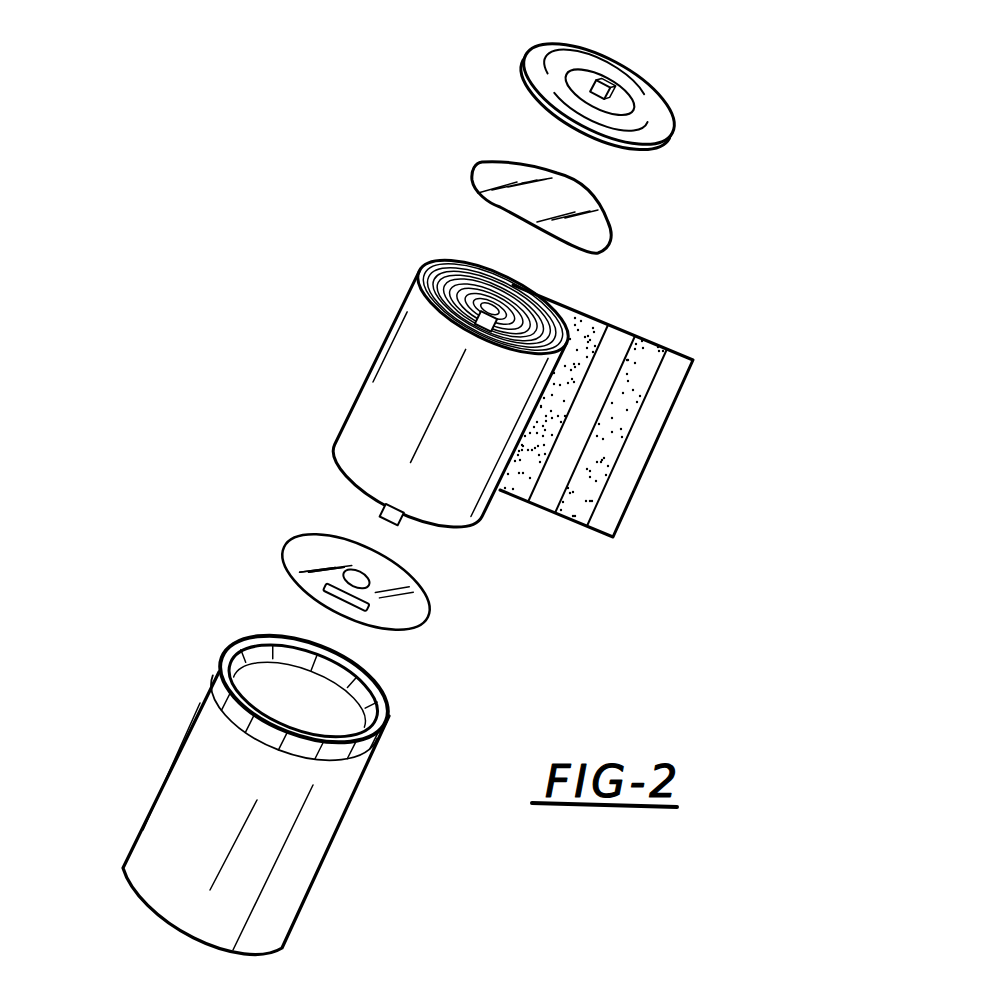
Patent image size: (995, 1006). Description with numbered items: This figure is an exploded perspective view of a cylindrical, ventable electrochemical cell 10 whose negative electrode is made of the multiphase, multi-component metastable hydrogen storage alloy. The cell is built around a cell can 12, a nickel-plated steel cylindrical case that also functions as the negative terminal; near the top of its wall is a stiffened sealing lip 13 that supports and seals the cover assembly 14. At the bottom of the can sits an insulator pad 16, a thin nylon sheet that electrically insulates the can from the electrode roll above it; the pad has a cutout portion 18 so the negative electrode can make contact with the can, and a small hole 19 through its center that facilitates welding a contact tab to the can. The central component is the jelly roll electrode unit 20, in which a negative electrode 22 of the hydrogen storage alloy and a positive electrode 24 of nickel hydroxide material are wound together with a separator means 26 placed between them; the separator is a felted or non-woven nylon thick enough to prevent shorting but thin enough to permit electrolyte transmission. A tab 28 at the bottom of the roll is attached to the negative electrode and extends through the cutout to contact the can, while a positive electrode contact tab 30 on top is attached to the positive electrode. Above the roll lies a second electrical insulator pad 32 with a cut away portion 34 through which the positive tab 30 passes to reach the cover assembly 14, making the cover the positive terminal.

The electrochemical cell 10 is at (737, 139).
The cell can 12 is at (178, 758).
The stiffened sealing lip 13 is at (220, 689).
The cover assembly 14 is at (628, 69).
The insulator pad 16 is at (430, 610).
The cutout portion 18 is at (367, 612).
The small hole 19 is at (337, 573).
The jelly roll electrode unit 20 is at (338, 291).
The negative electrode 22 is at (652, 343).
The positive electrode 24 is at (500, 490).
The separator means 26 is at (658, 443).
The bottom electrode tab 28 is at (390, 529).
The positive electrode contact tab 30 is at (496, 307).
The second electrical insulator pad 32 is at (472, 168).
The cut away portion 34 is at (486, 204).